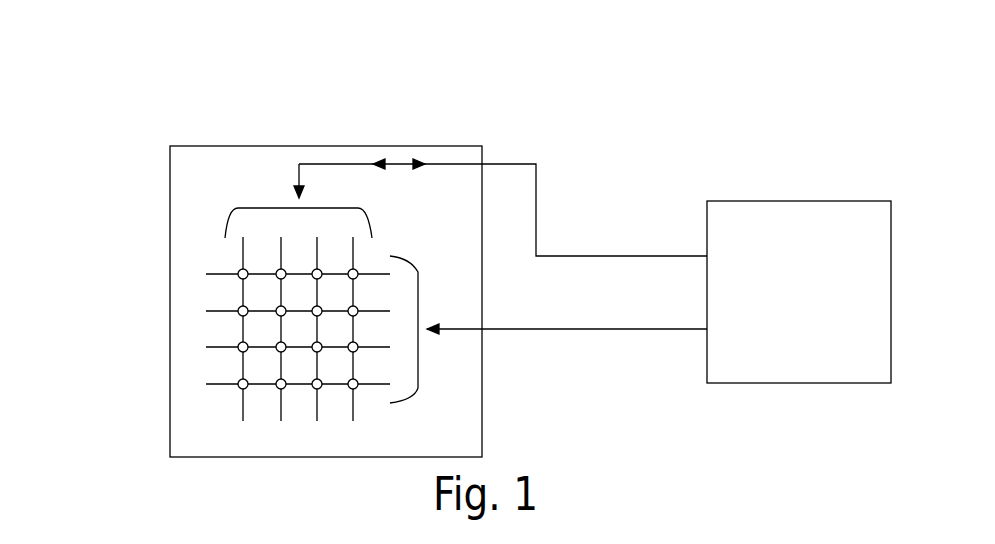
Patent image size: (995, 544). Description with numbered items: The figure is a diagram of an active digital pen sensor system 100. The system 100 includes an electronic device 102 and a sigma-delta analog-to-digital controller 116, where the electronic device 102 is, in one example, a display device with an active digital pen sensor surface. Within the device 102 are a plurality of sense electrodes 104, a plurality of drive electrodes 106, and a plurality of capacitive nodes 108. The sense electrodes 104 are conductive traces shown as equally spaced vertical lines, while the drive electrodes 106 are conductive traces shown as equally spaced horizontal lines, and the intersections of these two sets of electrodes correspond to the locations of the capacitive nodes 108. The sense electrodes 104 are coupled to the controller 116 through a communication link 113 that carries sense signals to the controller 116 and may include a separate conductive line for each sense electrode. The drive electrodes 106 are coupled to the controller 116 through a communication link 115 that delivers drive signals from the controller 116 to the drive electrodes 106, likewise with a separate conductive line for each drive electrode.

The active digital pen sensor system 100 is at (133, 70).
The electronic device 102 is at (170, 202).
The sense electrodes 104 is at (280, 208).
The drive electrodes 106 is at (421, 300).
The capacitive nodes 108 is at (242, 305).
The communication link 113 is at (653, 256).
The communication link 115 is at (652, 329).
The sigma-delta analog-to-digital controller 116 is at (797, 201).